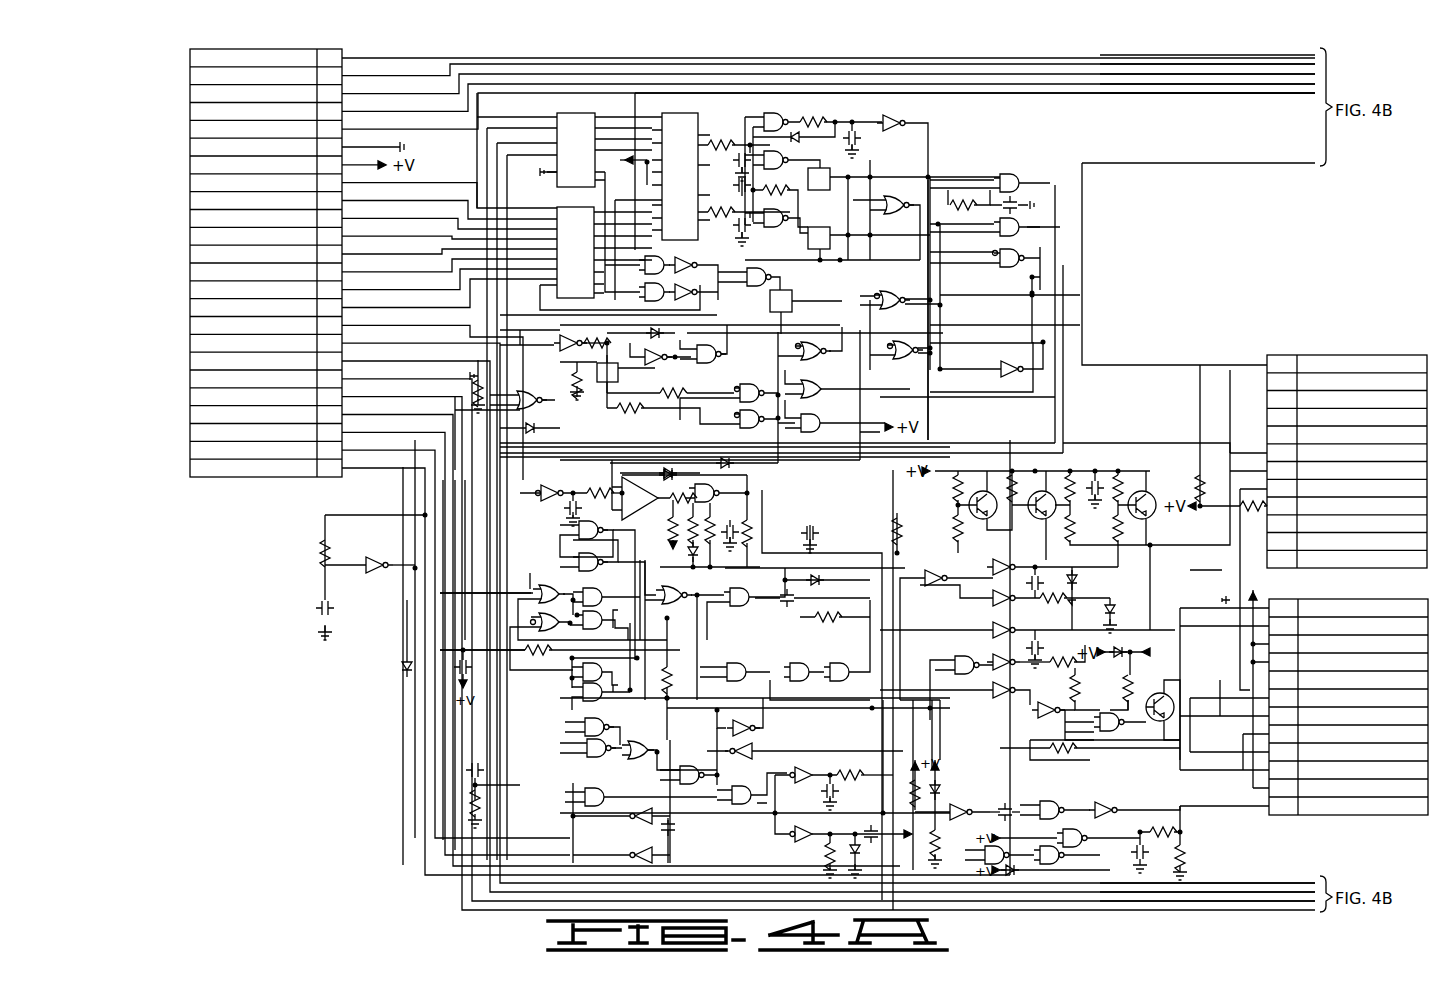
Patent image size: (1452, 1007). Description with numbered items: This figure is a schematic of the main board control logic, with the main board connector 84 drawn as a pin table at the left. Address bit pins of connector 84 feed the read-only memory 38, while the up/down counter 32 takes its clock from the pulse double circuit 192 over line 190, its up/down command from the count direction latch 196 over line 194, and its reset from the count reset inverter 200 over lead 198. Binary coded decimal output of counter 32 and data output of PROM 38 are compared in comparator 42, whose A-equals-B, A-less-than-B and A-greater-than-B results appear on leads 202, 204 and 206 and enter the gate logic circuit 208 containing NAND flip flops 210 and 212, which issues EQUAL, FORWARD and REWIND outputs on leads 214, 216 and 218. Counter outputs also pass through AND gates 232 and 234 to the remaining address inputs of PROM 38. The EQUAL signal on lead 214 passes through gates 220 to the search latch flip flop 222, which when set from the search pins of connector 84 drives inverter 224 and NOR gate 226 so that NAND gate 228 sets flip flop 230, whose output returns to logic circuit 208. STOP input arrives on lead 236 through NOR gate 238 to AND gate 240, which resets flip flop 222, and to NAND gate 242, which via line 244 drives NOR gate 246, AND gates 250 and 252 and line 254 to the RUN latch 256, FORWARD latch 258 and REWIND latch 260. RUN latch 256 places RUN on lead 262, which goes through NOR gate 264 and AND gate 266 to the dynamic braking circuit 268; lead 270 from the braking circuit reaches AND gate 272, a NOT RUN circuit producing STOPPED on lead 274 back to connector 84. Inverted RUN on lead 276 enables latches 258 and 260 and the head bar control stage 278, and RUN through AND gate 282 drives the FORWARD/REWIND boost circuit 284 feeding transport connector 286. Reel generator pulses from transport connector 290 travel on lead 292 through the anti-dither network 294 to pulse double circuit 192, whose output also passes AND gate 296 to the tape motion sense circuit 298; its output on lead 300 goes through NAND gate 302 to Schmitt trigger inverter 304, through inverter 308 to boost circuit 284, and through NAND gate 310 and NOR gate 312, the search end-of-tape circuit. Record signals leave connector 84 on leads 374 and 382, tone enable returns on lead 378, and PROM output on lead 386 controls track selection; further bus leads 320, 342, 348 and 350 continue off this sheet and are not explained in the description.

The main board connector 84 is at (190, 58).
The up/down counter 32 is at (530, 120).
The read-only memory 38 is at (580, 252).
The comparator 42 is at (681, 176).
The line 190 is at (714, 875).
The pulse double circuit 192 is at (1032, 846).
The line 194 is at (531, 142).
The count direction latch 196 is at (564, 557).
The lead 198 is at (537, 158).
The count reset inverter 200 is at (602, 482).
The lead 202 is at (739, 130).
The lead 204 is at (736, 166).
The lead 206 is at (749, 237).
The gate logic circuit 208 is at (902, 157).
The NAND flip flop 210 is at (806, 178).
The NAND flip flop 212 is at (806, 238).
The lead 214 is at (932, 149).
The lead 216 is at (1082, 200).
The lead 218 is at (1074, 278).
The gates 220 is at (732, 388).
The search latch flip flop 222 is at (618, 382).
The inverter 224 is at (998, 377).
The NOR gate 226 is at (996, 258).
The NAND gate 228 is at (748, 288).
The flip flop 230 is at (792, 308).
The AND gate 232 is at (670, 255).
The AND gate 234 is at (670, 286).
The lead 236 is at (400, 378).
The NOR gate 238 is at (785, 347).
The AND gate 240 is at (671, 404).
The NAND gate 242 is at (705, 422).
The line 244 is at (616, 432).
The NOR gate 246 is at (558, 813).
The AND gate 250 is at (610, 790).
The AND gate 252 is at (683, 772).
The line 254 is at (668, 723).
The RUN latch circuit 256 is at (577, 741).
The FORWARD latch circuit 258 is at (566, 706).
The REWIND latch circuit 260 is at (613, 644).
The lead 262 is at (1280, 160).
The NOR gate 264 is at (678, 585).
The AND gate 266 is at (766, 605).
The dynamic braking circuit 268 is at (1058, 597).
The lead 270 is at (950, 598).
The AND gate 272 is at (735, 680).
The lead 274 is at (378, 398).
The lead 276 is at (794, 692).
The head bar control stage 278 is at (1089, 696).
The AND gate 282 is at (965, 659).
The FORWARD/REWIND boost circuit 284 is at (1190, 547).
The transport connector 286 is at (1347, 600).
The transport connector 290 is at (1342, 353).
The lead 292 is at (1208, 570).
The integrating anti-dither network 294 is at (1218, 859).
The AND gate 296 is at (1050, 803).
The tape motion sense circuit 298 is at (952, 802).
The lead 300 is at (843, 810).
The NAND gate 302 is at (710, 502).
The Schmitt trigger hex inverter 304 is at (635, 489).
The inverter 308 is at (920, 571).
The NAND gate 310 is at (799, 680).
The NOR gate 312 is at (839, 680).
The signal line 320 is at (1150, 55).
The signal line 342 is at (1218, 901).
The signal line 348 is at (1297, 882).
The signal line 350 is at (1248, 892).
The lead 374 is at (1200, 64).
The lead 378 is at (1233, 84).
The lead 382 is at (1258, 74).
The lead 386 is at (1292, 93).